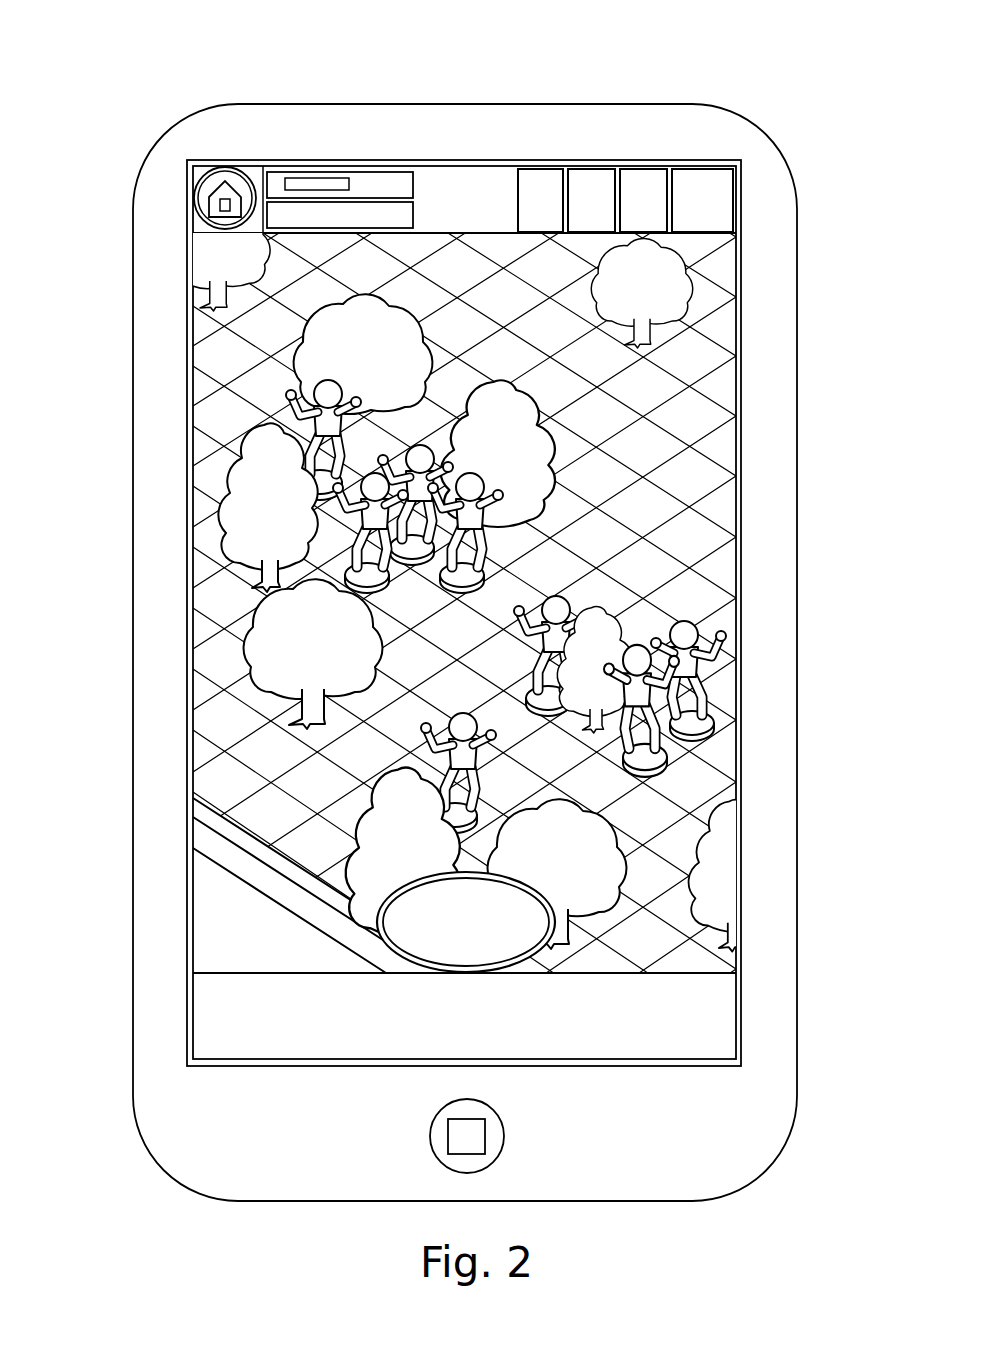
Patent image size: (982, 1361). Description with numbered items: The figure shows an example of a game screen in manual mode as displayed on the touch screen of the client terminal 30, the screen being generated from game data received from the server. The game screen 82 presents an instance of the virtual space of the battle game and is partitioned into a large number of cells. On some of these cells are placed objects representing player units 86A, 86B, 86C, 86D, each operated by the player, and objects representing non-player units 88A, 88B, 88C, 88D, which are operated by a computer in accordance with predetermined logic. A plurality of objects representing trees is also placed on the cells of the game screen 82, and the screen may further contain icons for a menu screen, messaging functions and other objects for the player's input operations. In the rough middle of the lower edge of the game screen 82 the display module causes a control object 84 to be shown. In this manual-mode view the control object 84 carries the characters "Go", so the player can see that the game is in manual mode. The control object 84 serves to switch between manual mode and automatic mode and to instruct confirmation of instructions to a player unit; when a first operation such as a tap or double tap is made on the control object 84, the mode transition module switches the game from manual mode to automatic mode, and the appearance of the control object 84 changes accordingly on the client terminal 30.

The client terminal 30 is at (657, 104).
The game screen 82 is at (743, 446).
The control object 84 is at (520, 903).
The player unit 86A is at (567, 592).
The player unit 86B is at (700, 628).
The player unit 86C is at (657, 666).
The player unit 86D is at (483, 737).
The non-player unit 88A is at (320, 393).
The non-player unit 88B is at (373, 487).
The non-player unit 88C is at (350, 511).
The non-player unit 88D is at (360, 530).